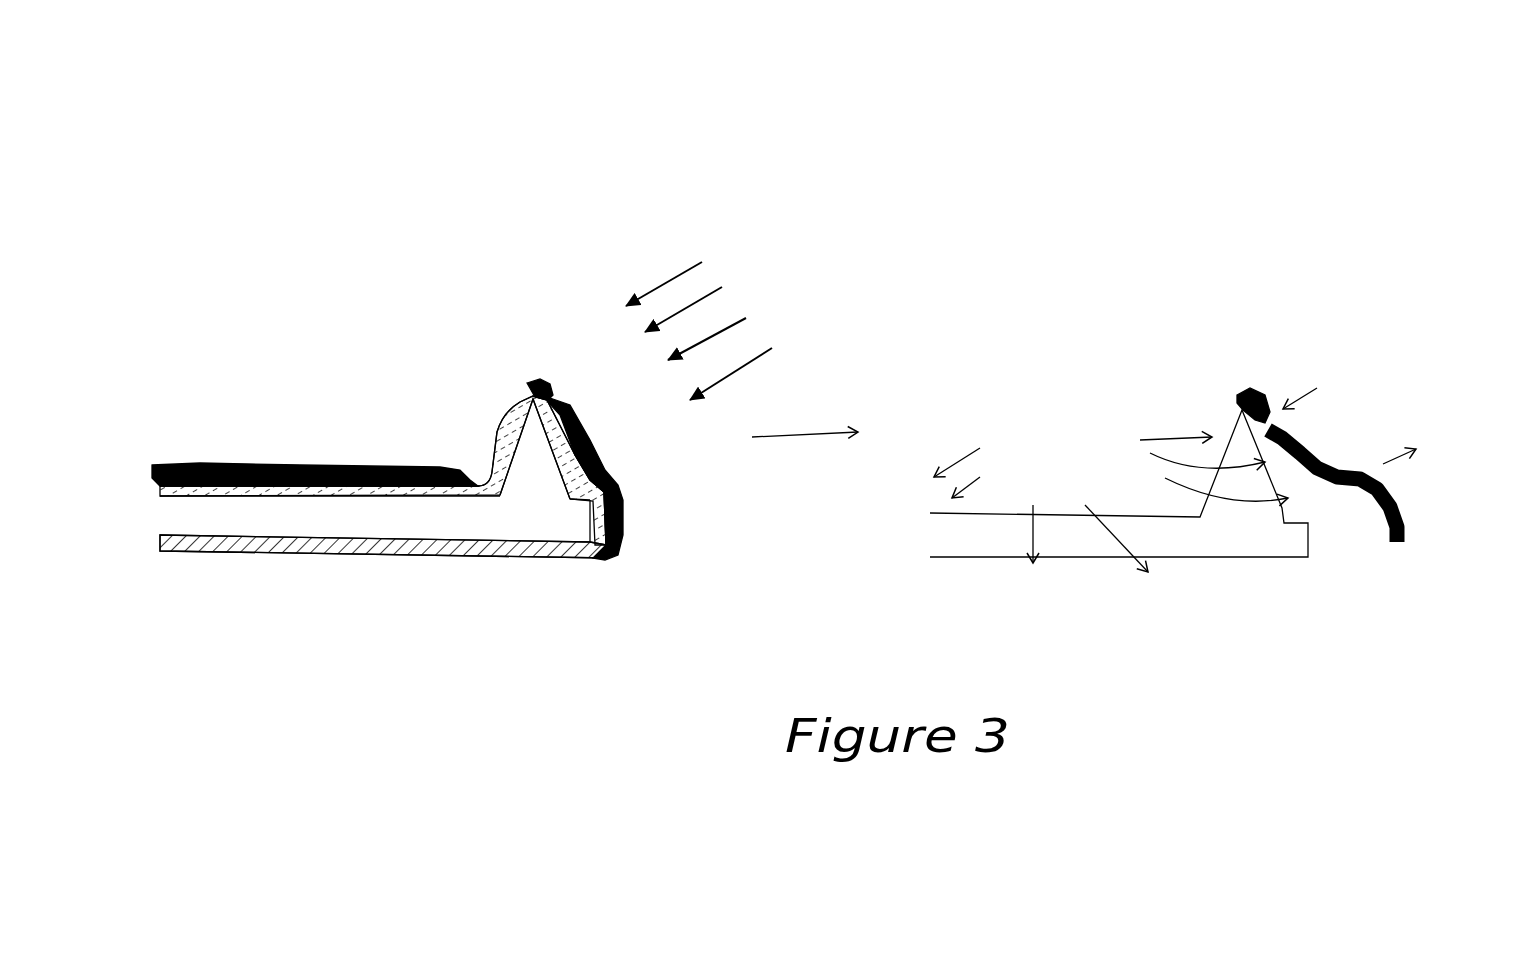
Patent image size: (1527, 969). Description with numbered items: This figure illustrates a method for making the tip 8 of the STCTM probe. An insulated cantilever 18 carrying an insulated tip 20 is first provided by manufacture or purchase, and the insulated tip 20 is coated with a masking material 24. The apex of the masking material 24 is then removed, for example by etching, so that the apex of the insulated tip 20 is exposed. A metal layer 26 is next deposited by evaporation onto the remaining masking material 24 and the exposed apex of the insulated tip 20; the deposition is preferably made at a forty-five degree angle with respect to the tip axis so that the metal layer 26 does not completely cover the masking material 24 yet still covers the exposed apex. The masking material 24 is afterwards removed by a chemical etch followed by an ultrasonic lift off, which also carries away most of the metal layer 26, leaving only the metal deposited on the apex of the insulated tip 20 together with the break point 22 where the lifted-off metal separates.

The tip 8 is at (826, 359).
The insulated cantilever 18 is at (277, 519).
The insulated tip 20 is at (534, 482).
The deposited metal cap at tip apex 22 is at (1250, 378).
The masking material 24 is at (480, 436).
The metal layer 26 is at (630, 488).